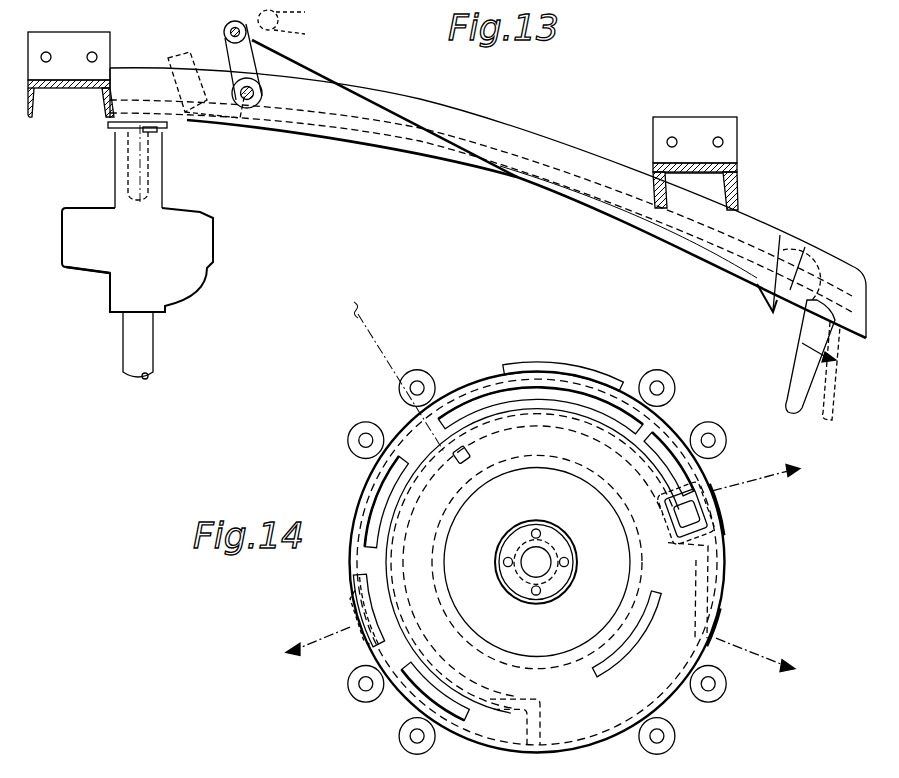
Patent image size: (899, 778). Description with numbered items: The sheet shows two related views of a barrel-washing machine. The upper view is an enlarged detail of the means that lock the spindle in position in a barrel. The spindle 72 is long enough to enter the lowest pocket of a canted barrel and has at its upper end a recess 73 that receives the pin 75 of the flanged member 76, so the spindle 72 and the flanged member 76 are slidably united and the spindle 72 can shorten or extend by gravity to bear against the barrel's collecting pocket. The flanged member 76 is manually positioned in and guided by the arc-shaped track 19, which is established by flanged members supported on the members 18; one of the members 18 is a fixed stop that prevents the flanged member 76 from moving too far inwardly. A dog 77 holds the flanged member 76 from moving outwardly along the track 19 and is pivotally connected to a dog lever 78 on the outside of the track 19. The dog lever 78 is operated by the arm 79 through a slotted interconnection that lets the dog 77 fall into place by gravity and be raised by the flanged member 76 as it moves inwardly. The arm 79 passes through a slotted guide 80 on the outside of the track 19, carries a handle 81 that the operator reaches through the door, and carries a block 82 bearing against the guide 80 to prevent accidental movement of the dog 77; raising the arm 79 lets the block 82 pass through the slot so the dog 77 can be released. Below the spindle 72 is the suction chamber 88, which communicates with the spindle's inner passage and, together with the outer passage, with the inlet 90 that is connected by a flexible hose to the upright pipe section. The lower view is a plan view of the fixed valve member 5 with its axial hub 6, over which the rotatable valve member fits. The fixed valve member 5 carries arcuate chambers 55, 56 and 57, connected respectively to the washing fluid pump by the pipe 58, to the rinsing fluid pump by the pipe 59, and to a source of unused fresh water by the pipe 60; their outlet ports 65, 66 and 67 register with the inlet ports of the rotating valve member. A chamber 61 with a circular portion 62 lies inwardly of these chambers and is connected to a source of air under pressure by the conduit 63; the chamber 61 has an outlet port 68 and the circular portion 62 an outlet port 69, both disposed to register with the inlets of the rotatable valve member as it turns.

In FIG. 14, the fixed valve member 5 is at (574, 720).
In FIG. 14, the axial hub 6 is at (516, 538).
In FIG. 13, the members 18 is at (70, 90).
In FIG. 13, the track 19 is at (398, 126).
In FIG. 14, the arcuate chamber 55 is at (370, 462).
In FIG. 14, the arcuate chamber 56 is at (465, 405).
In FIG. 14, the arcuate chamber 57 is at (702, 488).
In FIG. 14, the pipe 58 is at (298, 648).
In FIG. 14, the pipe 59 is at (600, 380).
In FIG. 14, the pipe 60 is at (770, 477).
In FIG. 14, the chamber 61 is at (682, 589).
In FIG. 14, the circular portion 62 is at (428, 508).
In FIG. 14, the conduit 63 is at (768, 658).
In FIG. 14, the outlet port 65 is at (364, 576).
In FIG. 14, the outlet port 66 is at (538, 393).
In FIG. 14, the outlet port 67 is at (688, 518).
In FIG. 14, the outlet port 68 is at (470, 462).
In FIG. 14, the outlet port 69 is at (626, 645).
In FIG. 13, the spindle 72 is at (156, 333).
In FIG. 13, the recess 73 is at (150, 172).
In FIG. 13, the pin 75 is at (152, 131).
In FIG. 13, the flanged member 76 is at (118, 128).
In FIG. 13, the dog 77 is at (214, 124).
In FIG. 13, the dog lever 78 is at (228, 46).
In FIG. 13, the arm 79 is at (488, 150).
In FIG. 13, the slotted guide 80 is at (806, 267).
In FIG. 13, the handle 81 is at (800, 382).
In FIG. 13, the block 82 is at (758, 293).
In FIG. 13, the suction chamber 88 is at (78, 272).
In FIG. 13, the inlet 90 is at (215, 246).